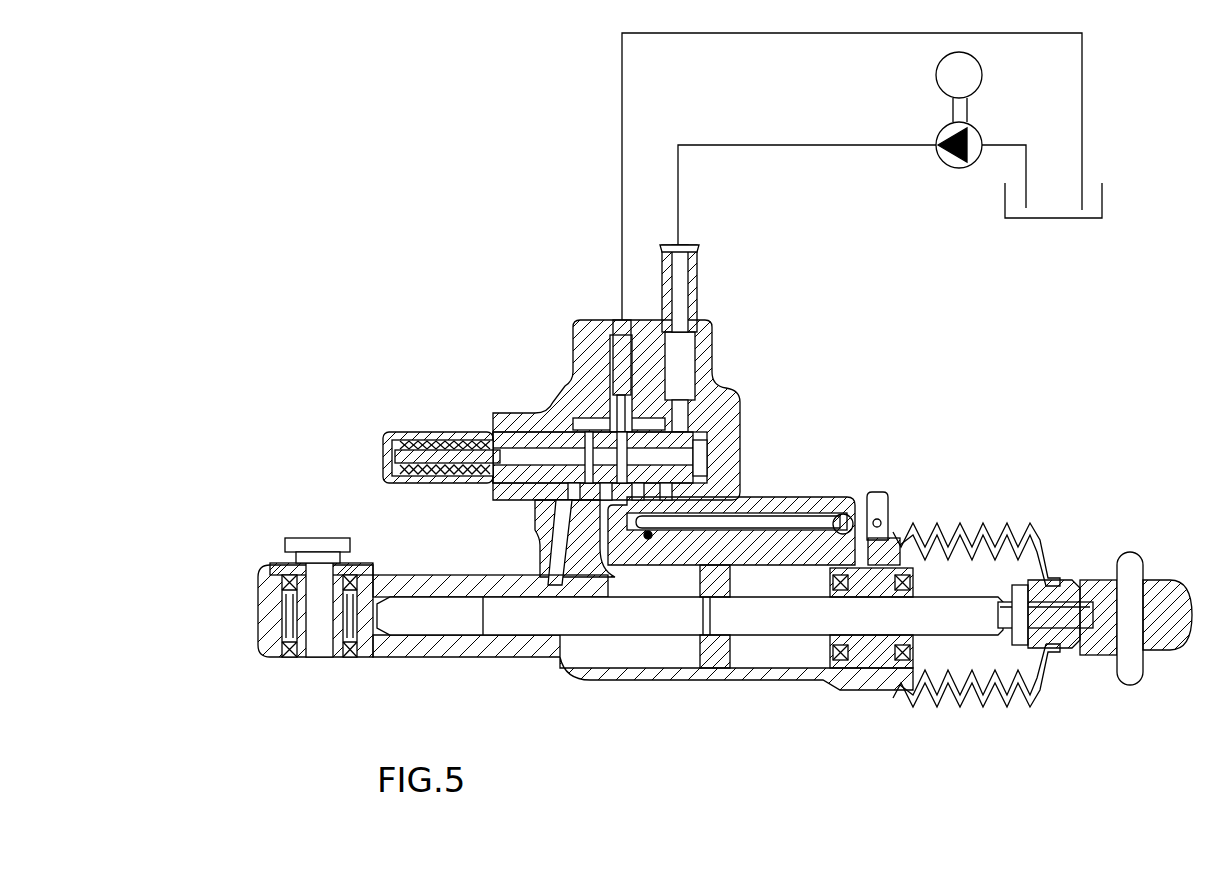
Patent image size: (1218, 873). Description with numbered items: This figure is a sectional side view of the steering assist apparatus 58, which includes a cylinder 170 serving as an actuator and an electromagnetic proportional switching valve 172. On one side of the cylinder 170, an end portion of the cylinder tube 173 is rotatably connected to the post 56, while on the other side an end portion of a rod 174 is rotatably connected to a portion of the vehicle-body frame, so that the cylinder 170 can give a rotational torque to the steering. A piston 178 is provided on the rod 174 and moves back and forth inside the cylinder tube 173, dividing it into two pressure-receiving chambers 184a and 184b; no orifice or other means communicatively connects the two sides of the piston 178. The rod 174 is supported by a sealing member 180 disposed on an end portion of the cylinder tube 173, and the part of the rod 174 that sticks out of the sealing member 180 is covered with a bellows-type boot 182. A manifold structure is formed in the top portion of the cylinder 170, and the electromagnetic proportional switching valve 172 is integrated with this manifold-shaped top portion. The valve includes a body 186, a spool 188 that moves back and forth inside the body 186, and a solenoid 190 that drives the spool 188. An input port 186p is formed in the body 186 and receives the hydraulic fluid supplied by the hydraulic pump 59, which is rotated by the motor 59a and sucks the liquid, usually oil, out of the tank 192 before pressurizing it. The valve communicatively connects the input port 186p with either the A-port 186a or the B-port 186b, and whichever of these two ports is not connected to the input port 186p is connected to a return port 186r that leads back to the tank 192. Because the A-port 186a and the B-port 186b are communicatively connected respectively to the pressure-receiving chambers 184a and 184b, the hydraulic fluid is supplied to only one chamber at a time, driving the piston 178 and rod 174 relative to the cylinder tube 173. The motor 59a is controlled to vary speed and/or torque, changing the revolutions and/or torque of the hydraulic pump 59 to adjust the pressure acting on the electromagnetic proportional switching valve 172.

The post 56 is at (313, 606).
The steering assist apparatus 58 is at (651, 570).
The hydraulic pump 59 is at (965, 166).
The motor 59a is at (982, 77).
The cylinder 170 is at (1042, 622).
The electromagnetic proportional switching valve 172 is at (618, 382).
The cylinder tube 173 is at (750, 675).
The rod 174 is at (935, 625).
The piston 178 is at (700, 668).
The sealing member 180 is at (870, 565).
The bellows-type boot 182 is at (1020, 695).
The pressure-receiving chamber 184a is at (800, 655).
The pressure-receiving chamber 184b is at (645, 650).
The body 186 is at (580, 355).
The A-port 186a is at (650, 495).
The B-port 186b is at (600, 492).
The input port 186p is at (686, 367).
The return port 186r is at (620, 355).
The spool 188 is at (520, 440).
The solenoid 190 is at (442, 440).
The tank 192 is at (1092, 213).